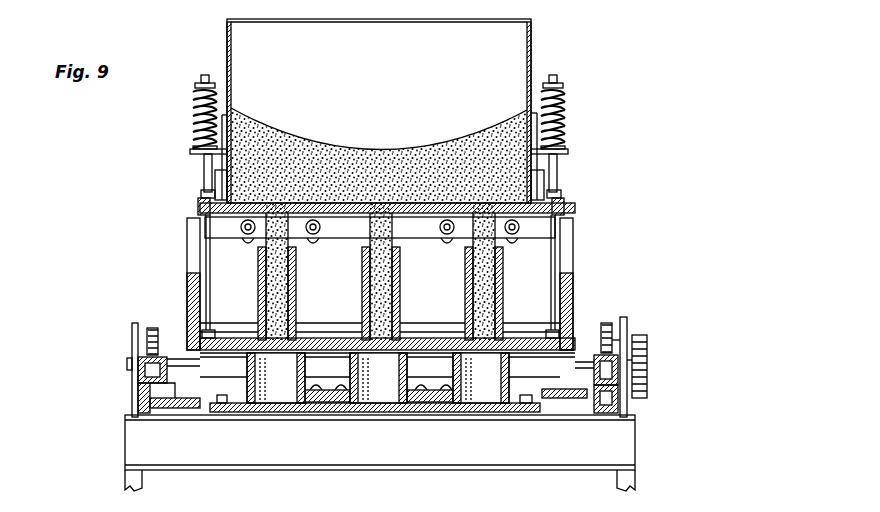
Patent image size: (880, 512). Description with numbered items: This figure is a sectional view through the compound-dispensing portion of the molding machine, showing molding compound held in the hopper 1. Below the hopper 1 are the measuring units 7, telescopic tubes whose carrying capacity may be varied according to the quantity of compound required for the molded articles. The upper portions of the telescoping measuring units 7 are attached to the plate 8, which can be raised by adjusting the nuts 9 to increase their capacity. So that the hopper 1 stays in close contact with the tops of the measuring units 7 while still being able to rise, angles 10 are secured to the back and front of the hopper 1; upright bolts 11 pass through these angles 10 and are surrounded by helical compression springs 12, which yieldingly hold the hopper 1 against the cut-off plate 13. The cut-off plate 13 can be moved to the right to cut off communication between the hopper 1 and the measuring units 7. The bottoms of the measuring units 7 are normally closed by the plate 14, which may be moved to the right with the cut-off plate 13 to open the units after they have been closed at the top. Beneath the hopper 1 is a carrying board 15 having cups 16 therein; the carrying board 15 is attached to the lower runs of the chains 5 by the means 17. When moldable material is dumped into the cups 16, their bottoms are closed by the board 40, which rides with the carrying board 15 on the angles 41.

The hopper 1 is at (545, 51).
The chains 5 is at (138, 374).
The measuring units 7 is at (292, 291).
The plate 8 is at (356, 220).
The nuts 9 is at (200, 210).
The angles 10 is at (200, 150).
The upright bolts 11 is at (205, 175).
The helical compression springs 12 is at (196, 118).
The cut-off plate 13 is at (440, 233).
The plate 14 is at (422, 352).
The carrying board 15 is at (556, 400).
The cups 16 is at (287, 396).
The means 17 is at (182, 362).
The board 40 is at (440, 413).
The angles 41 is at (247, 411).